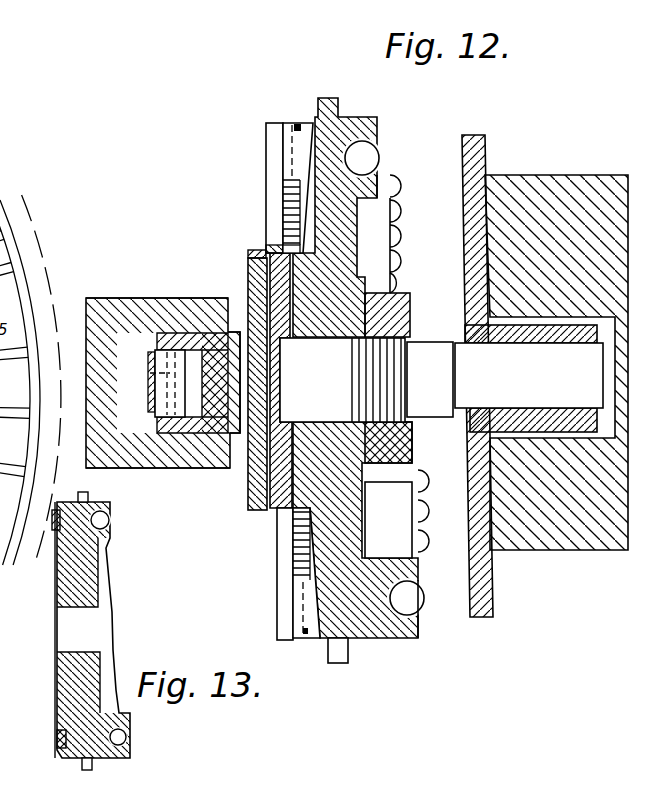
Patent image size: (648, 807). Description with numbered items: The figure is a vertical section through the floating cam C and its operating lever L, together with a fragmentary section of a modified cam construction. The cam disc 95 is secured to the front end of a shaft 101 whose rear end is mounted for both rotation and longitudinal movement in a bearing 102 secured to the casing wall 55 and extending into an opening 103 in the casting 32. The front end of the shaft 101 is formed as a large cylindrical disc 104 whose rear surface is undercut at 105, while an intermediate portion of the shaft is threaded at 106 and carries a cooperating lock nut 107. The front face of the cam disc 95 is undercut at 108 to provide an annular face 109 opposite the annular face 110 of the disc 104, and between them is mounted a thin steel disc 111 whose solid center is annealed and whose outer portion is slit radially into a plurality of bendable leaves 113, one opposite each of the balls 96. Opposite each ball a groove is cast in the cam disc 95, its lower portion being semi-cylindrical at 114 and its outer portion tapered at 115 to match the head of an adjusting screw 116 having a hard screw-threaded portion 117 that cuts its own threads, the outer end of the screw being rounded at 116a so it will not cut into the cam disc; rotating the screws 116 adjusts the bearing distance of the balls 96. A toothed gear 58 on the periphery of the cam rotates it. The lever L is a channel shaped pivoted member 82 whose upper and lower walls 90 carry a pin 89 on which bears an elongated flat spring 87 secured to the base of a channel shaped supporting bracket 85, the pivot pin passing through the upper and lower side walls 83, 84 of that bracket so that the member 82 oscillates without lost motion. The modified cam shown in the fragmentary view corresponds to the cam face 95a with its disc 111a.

In FIG. 12, the rounded outer end of adjusting screw 116a is at (298, 122).
In FIG. 12, the adjusting screw 116 is at (288, 126).
In FIG. 12, the cam disc 95 is at (355, 120).
In FIG. 12, the floating cam C is at (379, 115).
In FIG. 12, the balls 96 is at (393, 207).
In FIG. 13, the balls 96 is at (107, 523).
In FIG. 12, the casing wall 55 is at (482, 160).
In FIG. 12, the bendable leaves 113 is at (270, 145).
In FIG. 12, the thin steel disc 111 is at (266, 180).
In FIG. 12, the screw-threaded portion 117 is at (285, 210).
In FIG. 12, the annular face of cam disc 109 is at (287, 252).
In FIG. 12, the annular face of disc 110 is at (262, 256).
In FIG. 12, the large cylindrical disc 104 is at (248, 262).
In FIG. 12, the undercut 105 is at (250, 286).
In FIG. 12, the lock nut 107 is at (397, 300).
In FIG. 12, the lever L is at (133, 288).
In FIG. 12, the channel shaped supporting bracket 85 is at (132, 301).
In FIG. 12, the upper side wall 83 is at (158, 306).
In FIG. 12, the upper and lower walls of channel member 90 is at (178, 340).
In FIG. 12, the pin 89 is at (151, 378).
In FIG. 12, the elongated flat spring 87 is at (152, 396).
In FIG. 12, the lower side wall 84 is at (166, 455).
In FIG. 12, the pivoted member 82 is at (240, 438).
In FIG. 12, the undercut of cam disc 108 is at (298, 322).
In FIG. 12, the threaded portion of shaft 106 is at (390, 372).
In FIG. 12, the bearing 102 is at (506, 344).
In FIG. 12, the opening 103 is at (606, 378).
In FIG. 12, the shaft 101 is at (430, 419).
In FIG. 12, the semi-cylindrical groove portion 114 is at (313, 553).
In FIG. 12, the tapered groove portion 115 is at (388, 640).
In FIG. 12, the toothed gear 58 is at (339, 665).
In FIG. 13, the toothed gear 58 is at (82, 766).
In FIG. 12, the casting 32 is at (568, 540).
In FIG. 13, the clamping block face 95a is at (88, 568).
In FIG. 13, the retaining ring 111a is at (55, 722).